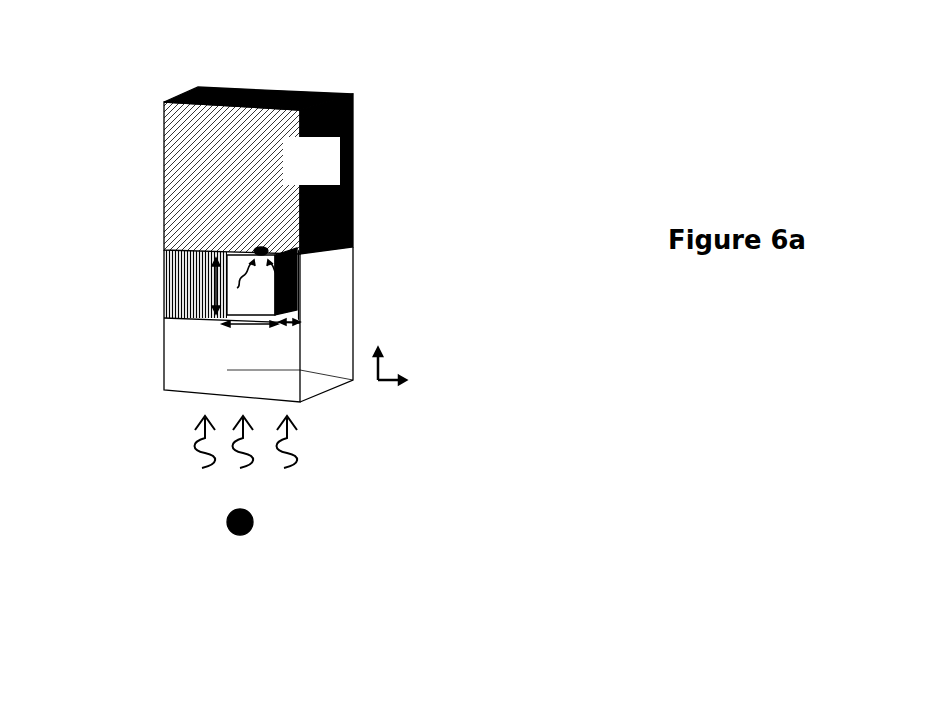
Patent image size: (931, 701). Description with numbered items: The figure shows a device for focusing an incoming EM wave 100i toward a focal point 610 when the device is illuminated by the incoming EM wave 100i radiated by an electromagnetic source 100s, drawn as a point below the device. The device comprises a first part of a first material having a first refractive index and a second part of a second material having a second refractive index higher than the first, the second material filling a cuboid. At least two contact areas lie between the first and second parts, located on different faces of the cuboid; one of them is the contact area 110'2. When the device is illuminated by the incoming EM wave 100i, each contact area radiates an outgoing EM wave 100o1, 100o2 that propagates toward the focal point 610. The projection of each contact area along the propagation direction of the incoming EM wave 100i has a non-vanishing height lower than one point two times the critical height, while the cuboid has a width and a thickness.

The outgoing EM wave 100o1 is at (225, 274).
The outgoing EM wave 100o2 is at (285, 277).
The contact area 110'2 is at (371, 281).
The focal point 610 is at (262, 250).
The incoming EM wave 100i is at (323, 440).
The electromagnetic source 100s is at (260, 521).